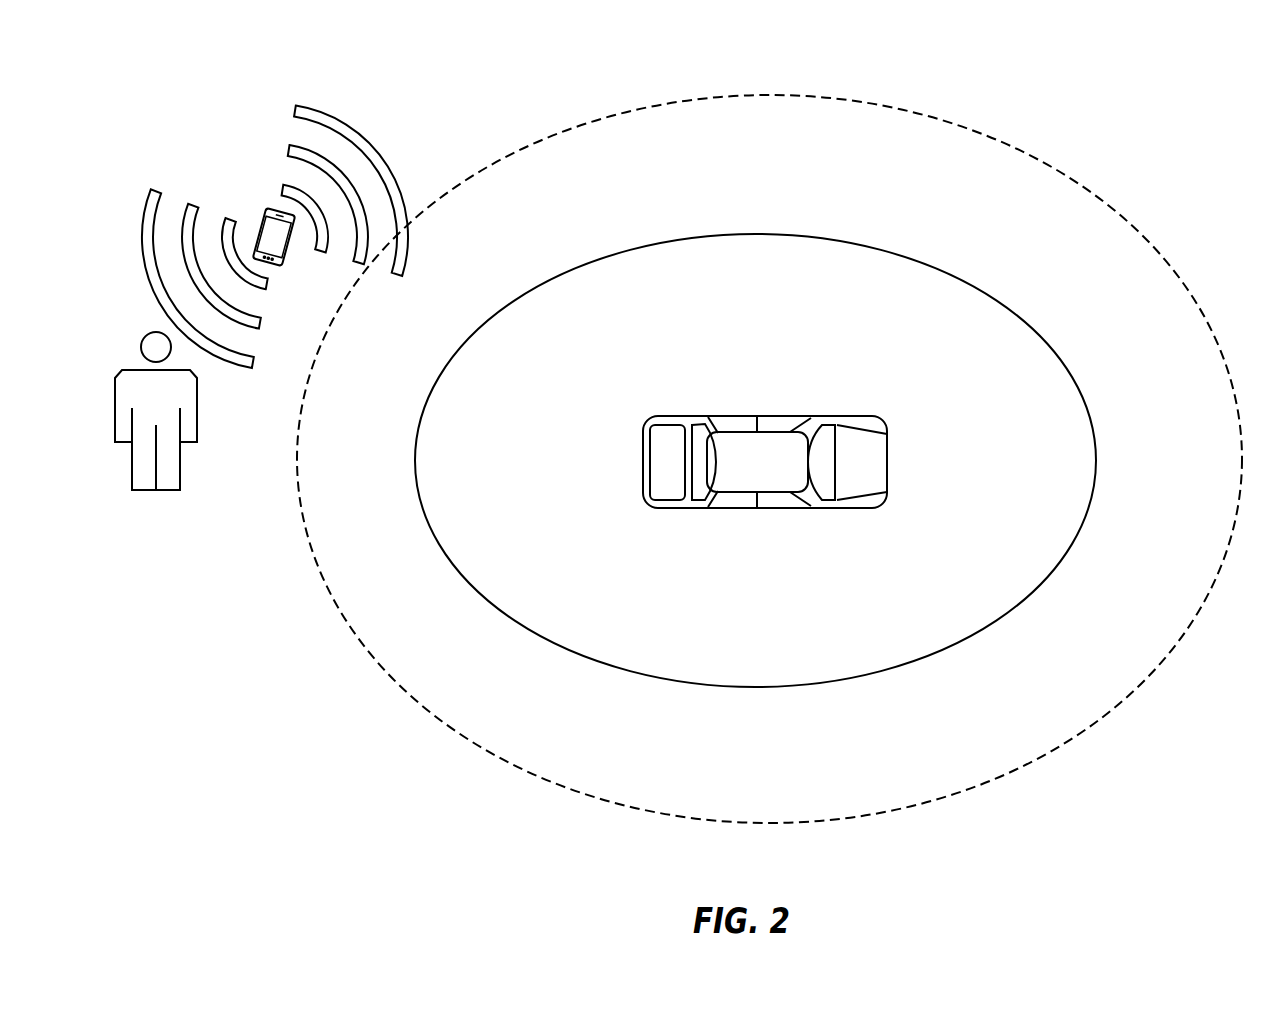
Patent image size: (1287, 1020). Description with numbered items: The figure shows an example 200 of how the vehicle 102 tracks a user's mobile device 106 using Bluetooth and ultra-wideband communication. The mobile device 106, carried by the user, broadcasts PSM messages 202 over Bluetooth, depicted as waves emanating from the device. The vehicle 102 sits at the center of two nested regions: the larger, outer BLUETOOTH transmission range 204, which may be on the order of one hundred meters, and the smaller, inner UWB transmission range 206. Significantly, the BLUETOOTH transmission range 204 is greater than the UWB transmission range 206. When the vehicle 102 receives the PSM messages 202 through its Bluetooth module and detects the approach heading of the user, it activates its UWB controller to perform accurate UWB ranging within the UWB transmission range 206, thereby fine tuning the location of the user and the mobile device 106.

The example of the operation 200 is at (214, 47).
The vehicle 102 is at (773, 472).
The mobile device 106 is at (265, 207).
The PSM messages 202 is at (358, 130).
The BLUETOOTH transmission range 204 is at (1025, 157).
The UWB transmission range 206 is at (592, 260).